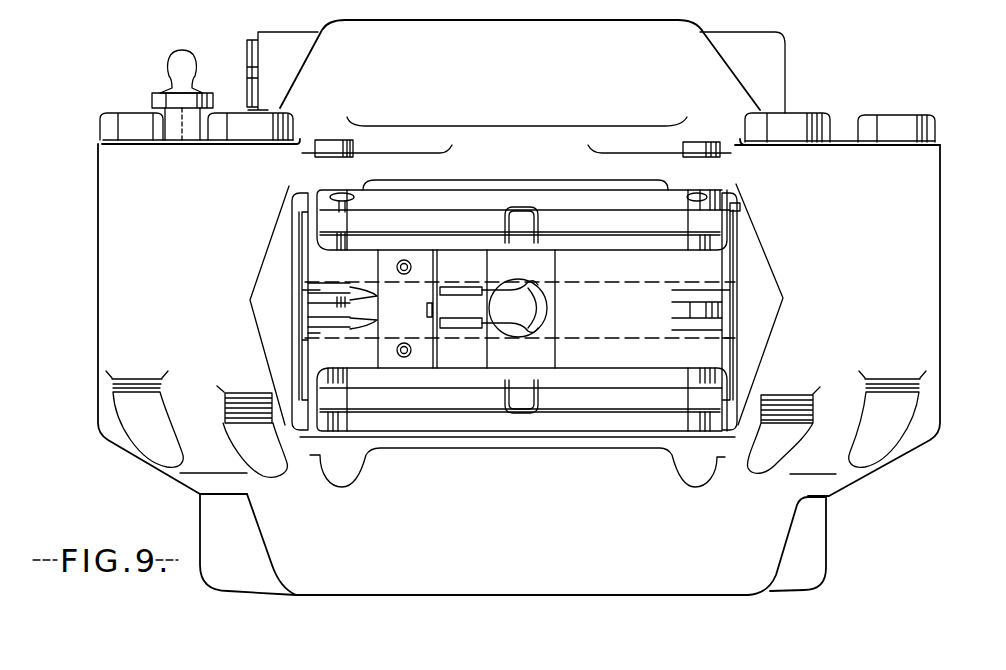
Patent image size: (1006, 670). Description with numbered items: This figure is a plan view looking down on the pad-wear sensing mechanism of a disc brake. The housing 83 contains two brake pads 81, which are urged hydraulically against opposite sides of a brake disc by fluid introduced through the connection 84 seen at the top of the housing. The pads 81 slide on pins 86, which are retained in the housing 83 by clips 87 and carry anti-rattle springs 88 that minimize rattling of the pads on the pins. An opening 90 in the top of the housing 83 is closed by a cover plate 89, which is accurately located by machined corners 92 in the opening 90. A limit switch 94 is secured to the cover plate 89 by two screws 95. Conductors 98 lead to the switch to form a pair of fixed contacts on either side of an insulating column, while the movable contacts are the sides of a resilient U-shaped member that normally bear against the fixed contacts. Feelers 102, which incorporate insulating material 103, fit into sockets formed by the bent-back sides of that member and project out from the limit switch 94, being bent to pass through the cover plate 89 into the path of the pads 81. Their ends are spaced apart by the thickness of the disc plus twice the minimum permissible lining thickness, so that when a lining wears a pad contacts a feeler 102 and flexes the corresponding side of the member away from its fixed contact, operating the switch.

The brake pads 81 is at (382, 220).
The housing 83 is at (930, 349).
The connection 84 is at (174, 52).
The pins 86 is at (731, 211).
The clips 87 is at (693, 193).
The anti-rattle springs 88 is at (429, 250).
The cover plate 89 is at (312, 205).
The opening 90 is at (735, 427).
The machined corners 92 is at (296, 188).
The limit switch 94 is at (383, 265).
The screws 95 is at (406, 259).
The conductors 98 is at (322, 306).
The feelers 102 is at (510, 293).
The insulating material 103 is at (480, 332).